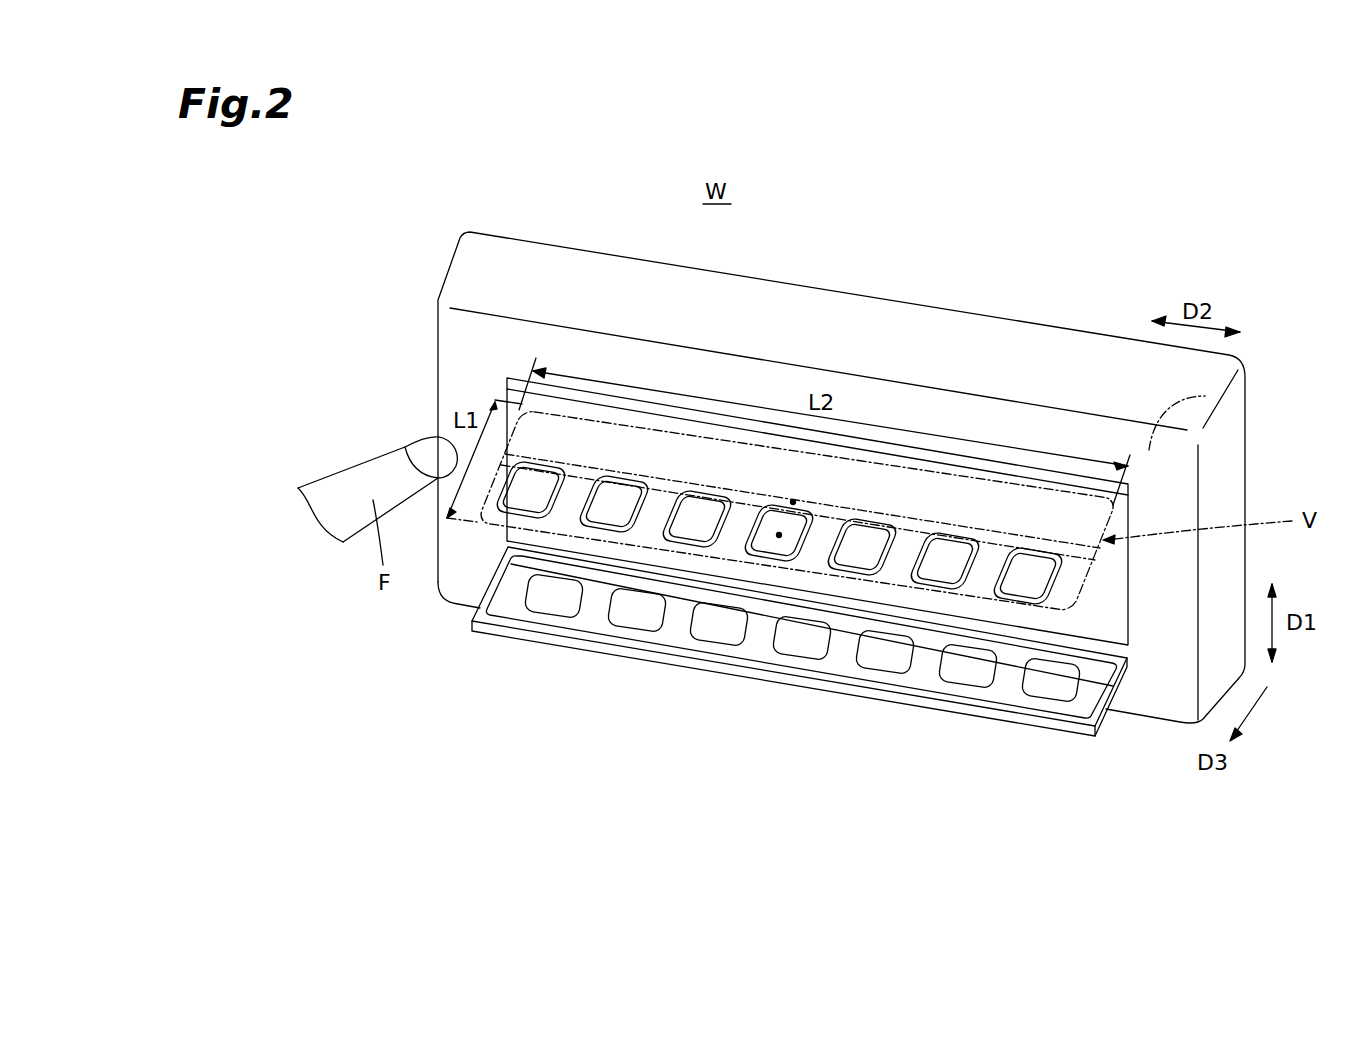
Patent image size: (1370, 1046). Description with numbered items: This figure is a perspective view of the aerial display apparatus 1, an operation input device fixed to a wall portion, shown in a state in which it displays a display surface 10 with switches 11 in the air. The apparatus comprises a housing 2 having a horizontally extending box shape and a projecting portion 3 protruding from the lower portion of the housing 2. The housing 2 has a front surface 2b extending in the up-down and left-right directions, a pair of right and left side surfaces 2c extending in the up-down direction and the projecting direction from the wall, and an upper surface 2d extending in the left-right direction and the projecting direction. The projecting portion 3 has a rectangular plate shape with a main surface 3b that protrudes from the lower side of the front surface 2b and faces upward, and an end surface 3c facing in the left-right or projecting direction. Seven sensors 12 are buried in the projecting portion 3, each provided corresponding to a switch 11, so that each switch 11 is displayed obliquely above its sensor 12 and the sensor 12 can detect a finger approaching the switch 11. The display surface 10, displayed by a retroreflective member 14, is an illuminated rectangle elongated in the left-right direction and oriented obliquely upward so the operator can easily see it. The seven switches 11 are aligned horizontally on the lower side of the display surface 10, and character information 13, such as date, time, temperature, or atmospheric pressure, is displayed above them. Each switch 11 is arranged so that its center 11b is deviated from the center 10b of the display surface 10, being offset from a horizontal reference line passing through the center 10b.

The aerial display apparatus 1 is at (1003, 236).
The housing 2 is at (1084, 372).
The front surface 2b is at (1205, 396).
The side surface 2c is at (1223, 574).
The upper surface 2d is at (880, 336).
The projecting portion 3 is at (1087, 741).
The main surface 3b is at (1093, 699).
The end surface 3c is at (1113, 697).
The display surface 10 is at (1157, 560).
The center of the display surface 10b is at (793, 505).
The switch 11 is at (575, 533).
The center of the switch 11b is at (778, 539).
The sensor 12 is at (552, 603).
The character information 13 is at (1112, 498).
The retroreflective member 14 is at (1118, 523).